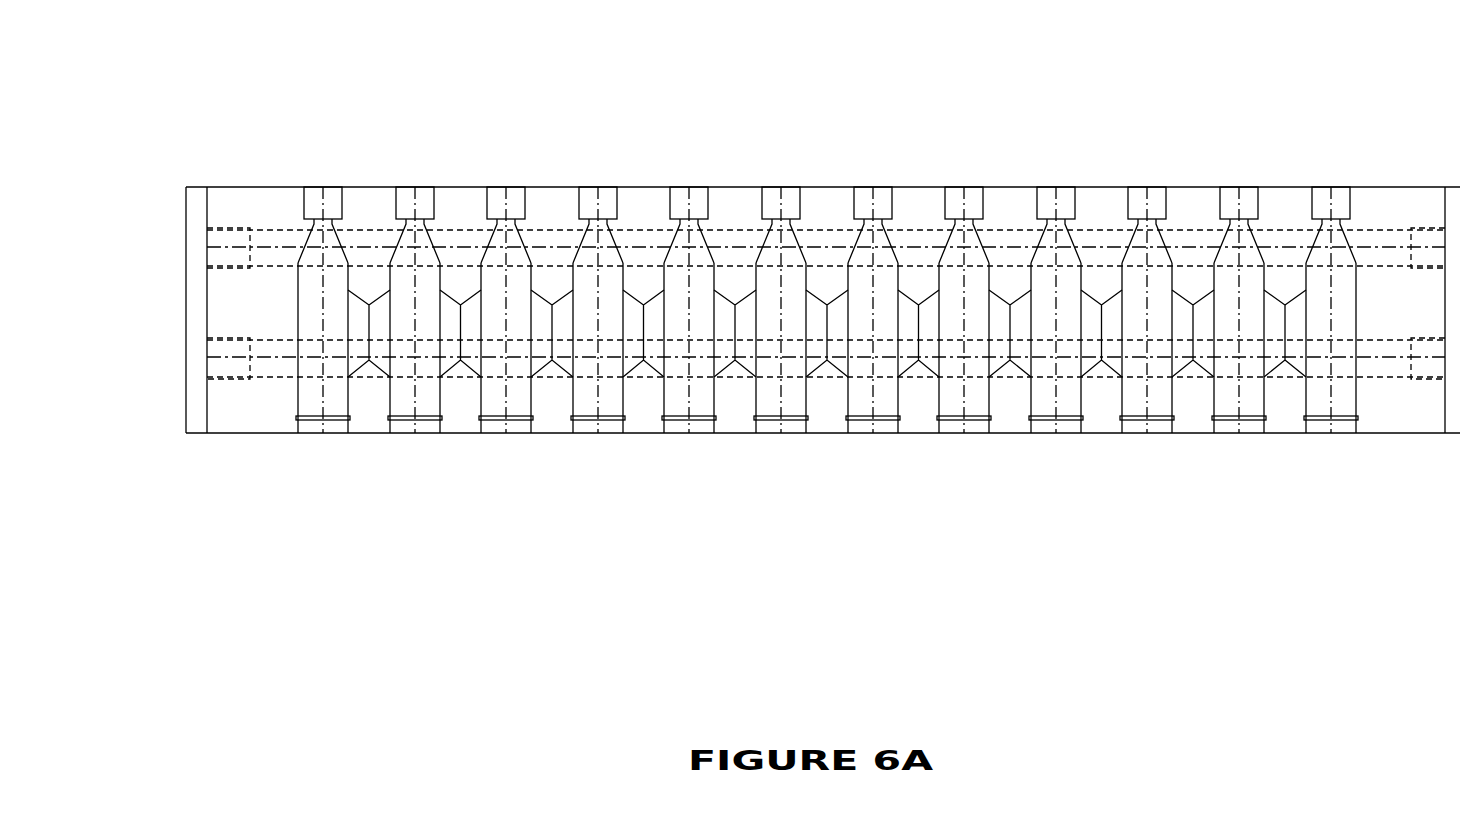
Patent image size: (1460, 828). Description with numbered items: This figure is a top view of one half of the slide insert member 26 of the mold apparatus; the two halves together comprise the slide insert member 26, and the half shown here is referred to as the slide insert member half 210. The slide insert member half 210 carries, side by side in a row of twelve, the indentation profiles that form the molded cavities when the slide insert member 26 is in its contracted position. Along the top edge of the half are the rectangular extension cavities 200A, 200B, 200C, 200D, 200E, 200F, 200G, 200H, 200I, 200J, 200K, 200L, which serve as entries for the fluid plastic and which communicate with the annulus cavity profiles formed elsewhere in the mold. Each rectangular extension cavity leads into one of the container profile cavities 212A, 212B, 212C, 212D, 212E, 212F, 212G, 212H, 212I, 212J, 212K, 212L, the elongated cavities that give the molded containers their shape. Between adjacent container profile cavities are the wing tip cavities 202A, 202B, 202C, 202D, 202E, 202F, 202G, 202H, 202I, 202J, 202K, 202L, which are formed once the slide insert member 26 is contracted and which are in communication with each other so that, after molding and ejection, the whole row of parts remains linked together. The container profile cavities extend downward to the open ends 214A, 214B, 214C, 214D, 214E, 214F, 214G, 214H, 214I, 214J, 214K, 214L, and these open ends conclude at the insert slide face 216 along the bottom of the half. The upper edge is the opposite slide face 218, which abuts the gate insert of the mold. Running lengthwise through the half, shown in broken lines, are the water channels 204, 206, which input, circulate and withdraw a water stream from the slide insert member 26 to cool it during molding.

The slide insert member 26 is at (230, 417).
The water channel 204 is at (275, 340).
The water channel 206 is at (270, 216).
The slide insert member half 210 is at (717, 545).
The insert slide face 216 is at (248, 433).
The opposite slide face 218 is at (670, 188).
The rectangular extension cavity 200A is at (316, 193).
The rectangular extension cavity 200B is at (412, 192).
The rectangular extension cavity 200C is at (503, 192).
The rectangular extension cavity 200D is at (610, 192).
The rectangular extension cavity 200E is at (698, 192).
The rectangular extension cavity 200F is at (790, 192).
The rectangular extension cavity 200G is at (878, 192).
The rectangular extension cavity 200H is at (960, 192).
The rectangular extension cavity 200I is at (1070, 192).
The rectangular extension cavity 200J is at (1162, 192).
The rectangular extension cavity 200K is at (1247, 192).
The rectangular extension cavity 200L is at (1337, 193).
The container profile cavity 212A is at (297, 267).
The container profile cavity 212B is at (391, 268).
The container profile cavity 212C is at (484, 268).
The container profile cavity 212D is at (574, 268).
The container profile cavity 212E is at (665, 268).
The container profile cavity 212F is at (757, 268).
The container profile cavity 212G is at (847, 268).
The container profile cavity 212H is at (940, 268).
The container profile cavity 212I is at (1032, 268).
The container profile cavity 212J is at (1123, 268).
The container profile cavity 212K is at (1215, 268).
The container profile cavity 212L is at (1307, 268).
The wing tip cavity 202A is at (360, 377).
The wing tip cavity 202B is at (452, 378).
The wing tip cavity 202C is at (547, 378).
The wing tip cavity 202D is at (638, 375).
The wing tip cavity 202E is at (723, 375).
The wing tip cavity 202F is at (838, 375).
The wing tip cavity 202G is at (925, 375).
The wing tip cavity 202H is at (1003, 374).
The wing tip cavity 202I is at (1100, 374).
The wing tip cavity 202J is at (1190, 374).
The wing tip cavity 202K is at (1277, 374).
The wing tip cavity 202L is at (1297, 374).
The open end 214A is at (300, 428).
The open end 214B is at (396, 430).
The open end 214C is at (488, 430).
The open end 214D is at (578, 430).
The open end 214E is at (670, 430).
The open end 214F is at (762, 430).
The open end 214G is at (853, 430).
The open end 214H is at (943, 430).
The open end 214I is at (1035, 430).
The open end 214J is at (1127, 430).
The open end 214K is at (1217, 430).
The open end 214L is at (1310, 430).